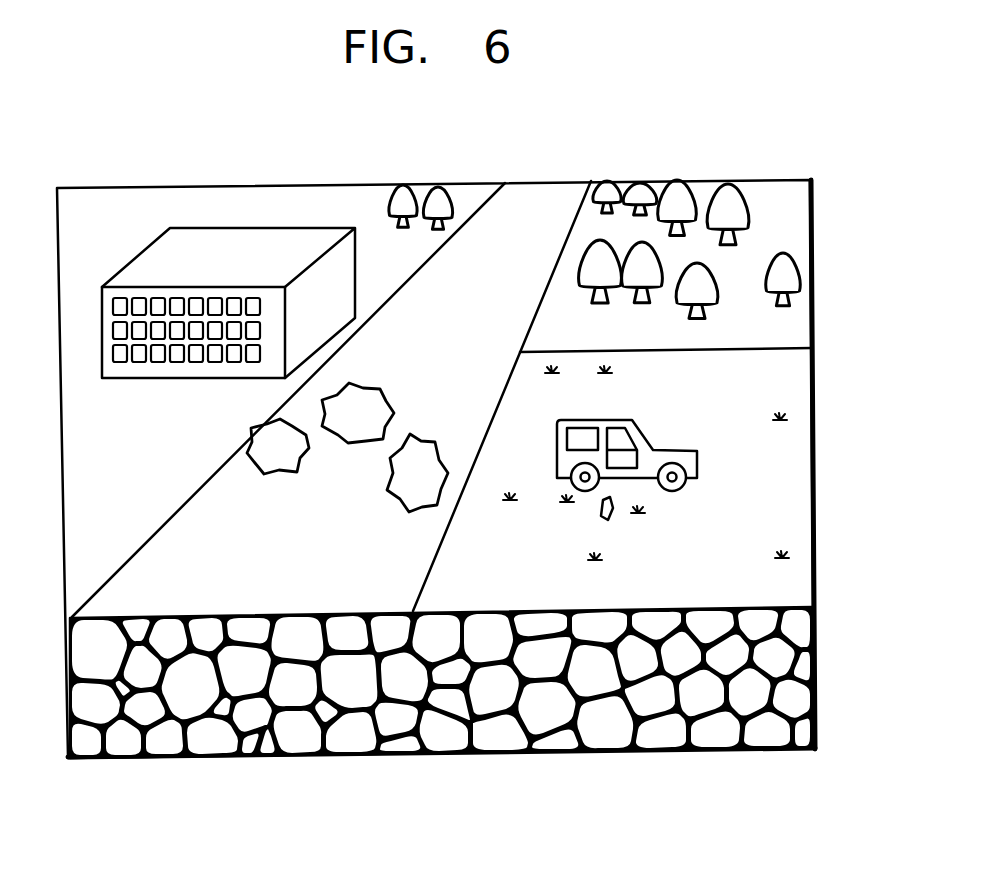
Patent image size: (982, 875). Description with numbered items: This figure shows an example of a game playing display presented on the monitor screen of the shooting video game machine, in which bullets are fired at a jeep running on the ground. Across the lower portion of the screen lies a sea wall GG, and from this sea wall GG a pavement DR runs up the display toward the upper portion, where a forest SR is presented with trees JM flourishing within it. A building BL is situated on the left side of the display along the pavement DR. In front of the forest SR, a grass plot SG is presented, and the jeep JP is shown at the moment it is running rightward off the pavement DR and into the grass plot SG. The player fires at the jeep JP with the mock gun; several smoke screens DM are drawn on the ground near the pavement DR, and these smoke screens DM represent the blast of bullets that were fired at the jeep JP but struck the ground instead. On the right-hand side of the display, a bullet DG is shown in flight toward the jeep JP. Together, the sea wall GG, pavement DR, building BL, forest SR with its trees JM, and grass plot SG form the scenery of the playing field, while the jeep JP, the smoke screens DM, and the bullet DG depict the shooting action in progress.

The trees JM is at (438, 202).
The forest SR is at (782, 233).
The building BL is at (160, 378).
The pavement DR is at (203, 513).
The smoke screens DM is at (280, 460).
The jeep JP is at (652, 450).
The grass plot SG is at (792, 483).
The bullet DG is at (612, 516).
The sea wall GG is at (615, 755).